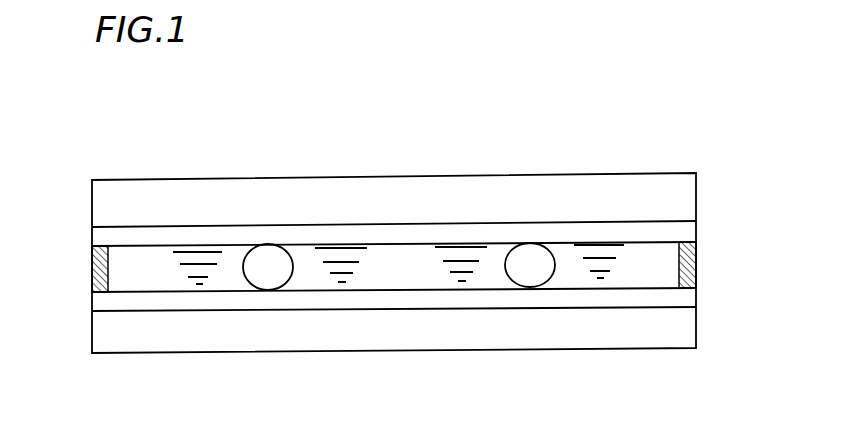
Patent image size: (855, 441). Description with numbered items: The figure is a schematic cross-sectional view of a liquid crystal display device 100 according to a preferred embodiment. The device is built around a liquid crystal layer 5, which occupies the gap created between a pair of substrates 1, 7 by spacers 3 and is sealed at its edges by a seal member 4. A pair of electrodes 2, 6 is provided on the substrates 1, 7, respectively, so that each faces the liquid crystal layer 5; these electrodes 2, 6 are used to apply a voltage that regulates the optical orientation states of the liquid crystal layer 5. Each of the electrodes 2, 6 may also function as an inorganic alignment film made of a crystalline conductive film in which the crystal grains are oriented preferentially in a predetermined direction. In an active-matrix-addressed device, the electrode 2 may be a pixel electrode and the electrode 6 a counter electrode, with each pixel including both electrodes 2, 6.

The liquid crystal display device 100 is at (717, 155).
The substrate 1 is at (685, 337).
The electrode 2 is at (688, 302).
The spacers 3 is at (528, 277).
The seal member 4 is at (92, 272).
The liquid crystal layer 5 is at (648, 248).
The electrode 6 is at (93, 237).
The substrate 7 is at (108, 195).